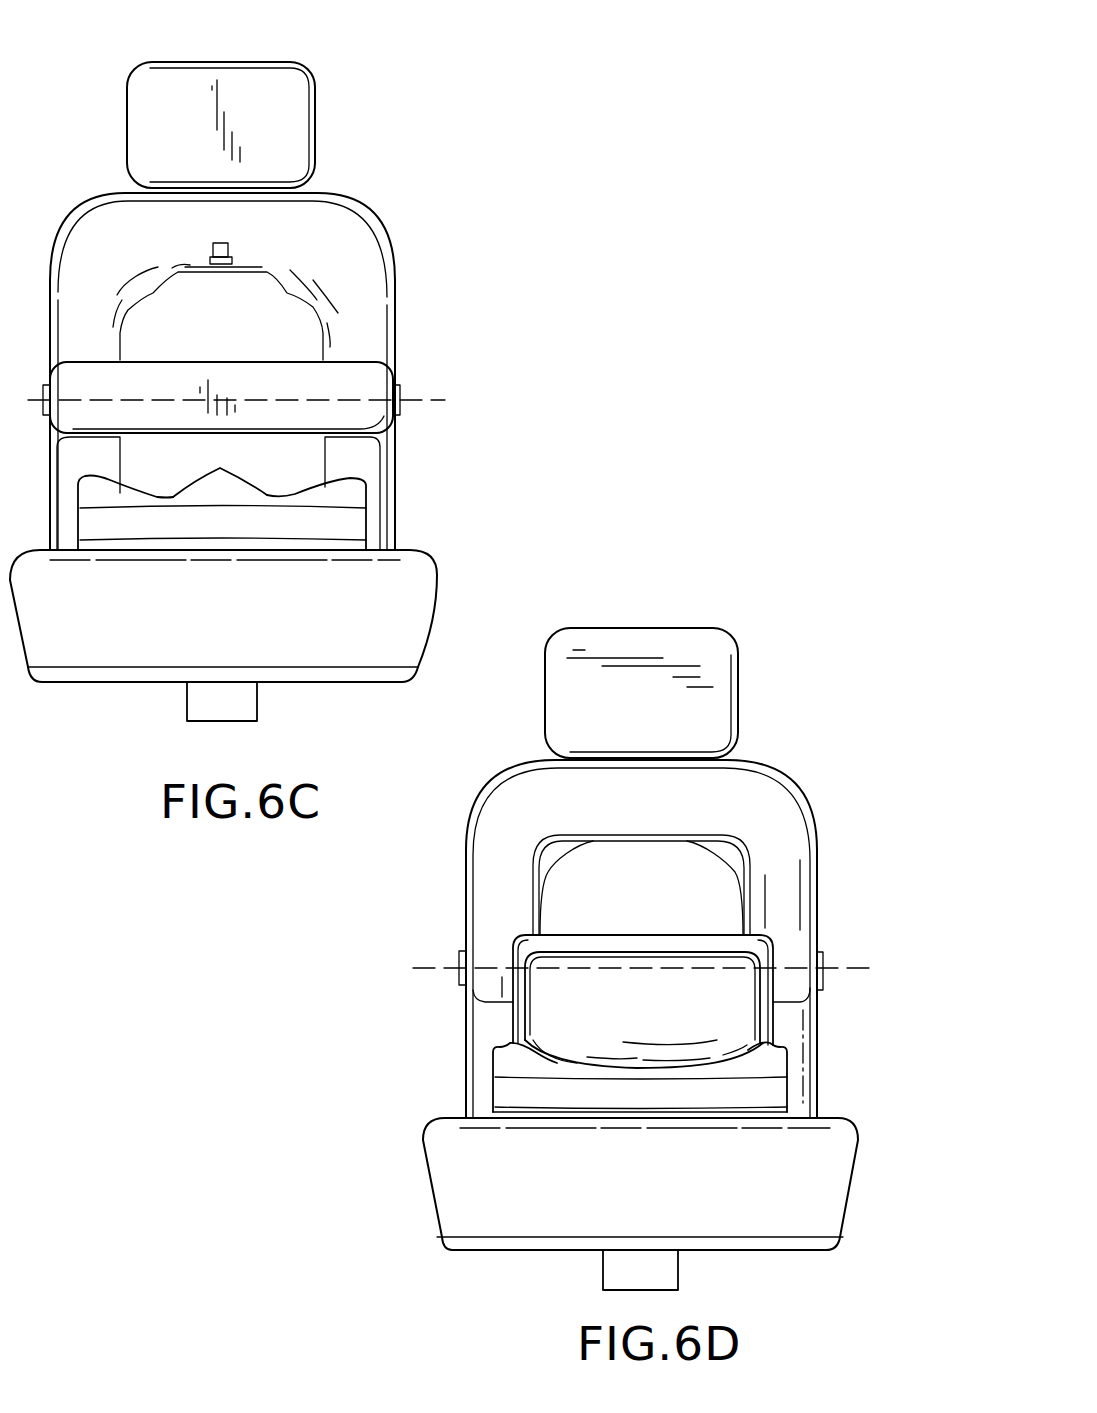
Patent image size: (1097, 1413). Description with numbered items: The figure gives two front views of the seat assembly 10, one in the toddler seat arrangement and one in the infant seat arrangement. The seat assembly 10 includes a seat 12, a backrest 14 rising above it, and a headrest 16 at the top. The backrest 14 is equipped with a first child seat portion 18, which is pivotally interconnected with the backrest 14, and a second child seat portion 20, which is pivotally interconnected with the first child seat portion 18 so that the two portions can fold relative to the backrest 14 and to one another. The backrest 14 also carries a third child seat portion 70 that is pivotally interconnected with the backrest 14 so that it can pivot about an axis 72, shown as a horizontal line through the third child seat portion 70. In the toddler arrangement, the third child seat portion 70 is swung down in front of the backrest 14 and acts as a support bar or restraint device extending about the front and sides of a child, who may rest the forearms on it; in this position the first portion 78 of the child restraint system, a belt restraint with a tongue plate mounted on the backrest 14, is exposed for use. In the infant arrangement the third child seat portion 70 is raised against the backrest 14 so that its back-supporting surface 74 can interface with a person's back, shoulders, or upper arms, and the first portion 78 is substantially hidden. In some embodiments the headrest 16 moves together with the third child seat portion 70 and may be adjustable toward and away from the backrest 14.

In FIG. 6C, the seat assembly 10 is at (491, 195).
In FIG. 6D, the seat assembly 10 is at (769, 601).
In FIG. 6C, the seat 12 is at (405, 578).
In FIG. 6D, the seat 12 is at (427, 1182).
In FIG. 6C, the backrest 14 is at (395, 283).
In FIG. 6D, the backrest 14 is at (466, 1003).
In FIG. 6C, the headrest 16 is at (253, 85).
In FIG. 6D, the headrest 16 is at (637, 627).
In FIG. 6C, the first child seat portion 18 is at (368, 523).
In FIG. 6D, the first child seat portion 18 is at (490, 1088).
In FIG. 6C, the second child seat portion 20 is at (243, 477).
In FIG. 6D, the second child seat portion 20 is at (609, 1004).
In FIG. 6C, the third child seat portion 70 is at (362, 364).
In FIG. 6D, the third child seat portion 70 is at (643, 990).
In FIG. 6C, the axis 72 is at (405, 400).
In FIG. 6D, the axis 72 is at (446, 967).
In FIG. 6D, the back-supporting surface 74 is at (772, 818).
In FIG. 6C, the first portion of child restraint system 78 is at (230, 250).